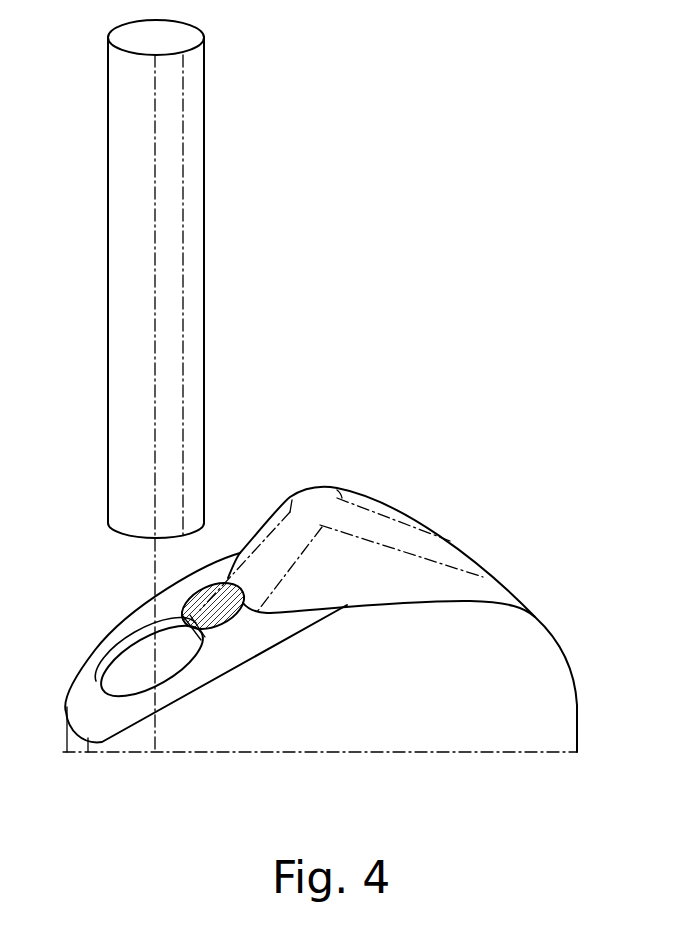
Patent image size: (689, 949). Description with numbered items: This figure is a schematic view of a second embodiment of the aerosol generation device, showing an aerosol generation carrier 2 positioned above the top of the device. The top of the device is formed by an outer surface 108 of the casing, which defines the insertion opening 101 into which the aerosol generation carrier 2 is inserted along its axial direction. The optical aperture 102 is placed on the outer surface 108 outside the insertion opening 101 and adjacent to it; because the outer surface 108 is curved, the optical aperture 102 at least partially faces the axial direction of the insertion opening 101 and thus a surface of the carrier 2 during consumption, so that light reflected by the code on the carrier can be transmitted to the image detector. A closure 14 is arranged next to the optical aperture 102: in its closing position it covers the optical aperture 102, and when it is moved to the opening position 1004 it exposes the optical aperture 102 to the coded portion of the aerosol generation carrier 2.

The aerosol generation carrier 2 is at (192, 225).
The opening position 1004 is at (338, 460).
The closure 14 is at (398, 528).
The insertion opening 101 is at (118, 675).
The optical aperture 102 is at (230, 620).
The outer surface 108 is at (232, 647).